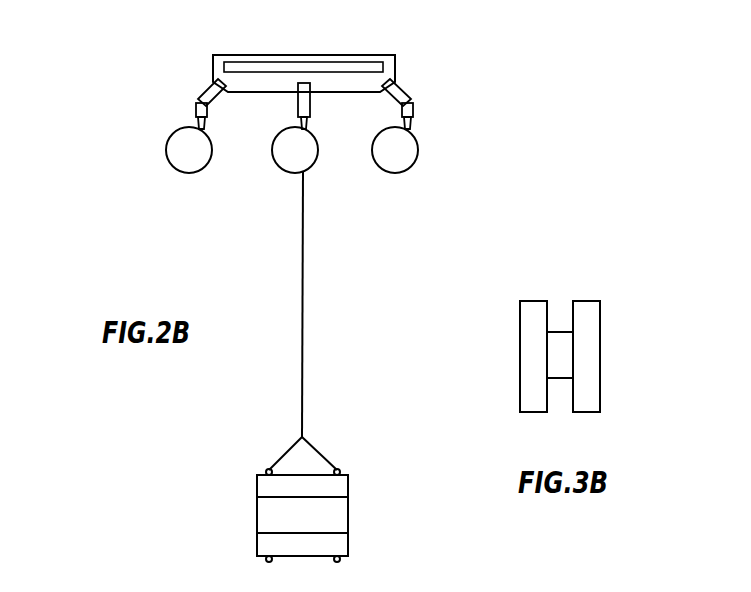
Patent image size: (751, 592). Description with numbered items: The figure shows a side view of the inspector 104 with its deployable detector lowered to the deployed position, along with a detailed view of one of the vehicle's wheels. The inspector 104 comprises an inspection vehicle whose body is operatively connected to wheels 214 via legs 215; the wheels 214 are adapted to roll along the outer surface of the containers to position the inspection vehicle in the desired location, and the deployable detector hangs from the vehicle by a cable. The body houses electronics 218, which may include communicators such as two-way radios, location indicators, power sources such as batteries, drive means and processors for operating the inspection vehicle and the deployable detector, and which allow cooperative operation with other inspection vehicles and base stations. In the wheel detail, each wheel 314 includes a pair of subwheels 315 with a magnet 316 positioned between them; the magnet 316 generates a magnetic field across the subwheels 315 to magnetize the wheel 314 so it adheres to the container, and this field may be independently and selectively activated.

In FIG. 2B, the inspector 104 is at (304, 117).
In FIG. 2B, the electronics 218 is at (315, 67).
In FIG. 2B, the legs 215 is at (196, 109).
In FIG. 2B, the wheels 214 is at (207, 168).
In FIG. 3B, the wheel 314 is at (609, 347).
In FIG. 3B, the subwheels 315 is at (537, 405).
In FIG. 3B, the magnet 316 is at (563, 355).